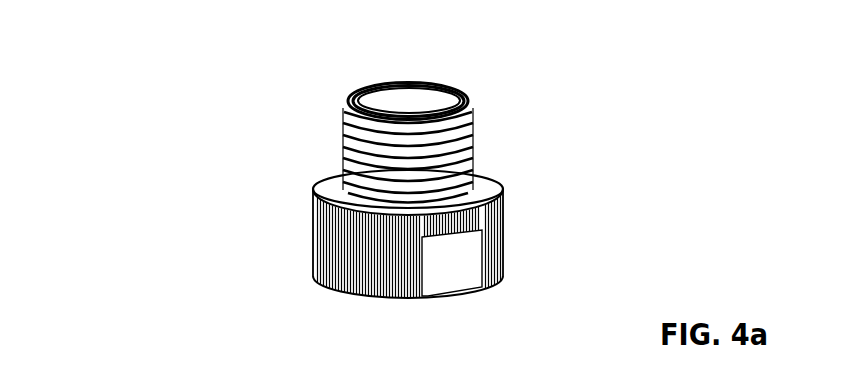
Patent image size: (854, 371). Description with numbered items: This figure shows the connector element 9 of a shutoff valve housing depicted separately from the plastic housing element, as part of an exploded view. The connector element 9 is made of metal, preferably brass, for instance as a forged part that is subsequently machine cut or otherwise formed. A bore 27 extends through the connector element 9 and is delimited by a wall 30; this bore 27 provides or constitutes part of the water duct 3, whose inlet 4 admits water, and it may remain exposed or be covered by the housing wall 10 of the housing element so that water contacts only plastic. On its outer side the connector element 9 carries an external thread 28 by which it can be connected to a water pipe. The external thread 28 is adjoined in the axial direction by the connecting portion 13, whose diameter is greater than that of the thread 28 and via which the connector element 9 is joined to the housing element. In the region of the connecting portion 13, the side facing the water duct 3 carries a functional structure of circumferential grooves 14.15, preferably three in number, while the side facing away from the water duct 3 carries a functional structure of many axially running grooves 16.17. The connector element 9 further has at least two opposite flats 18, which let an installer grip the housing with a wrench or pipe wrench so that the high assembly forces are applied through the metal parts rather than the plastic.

The water duct 3 is at (425, 95).
The inlet 4 is at (385, 85).
The connector element 9 is at (475, 126).
The housing wall 10 is at (355, 96).
The connecting portion 13 is at (505, 230).
The functional structure with circumferential grooves 14.15 is at (312, 273).
The functional structure with axial grooves 16.17 is at (338, 258).
The flats 18 is at (457, 260).
The bore 27 is at (400, 108).
The external thread 28 is at (353, 152).
The wall 30 is at (402, 82).